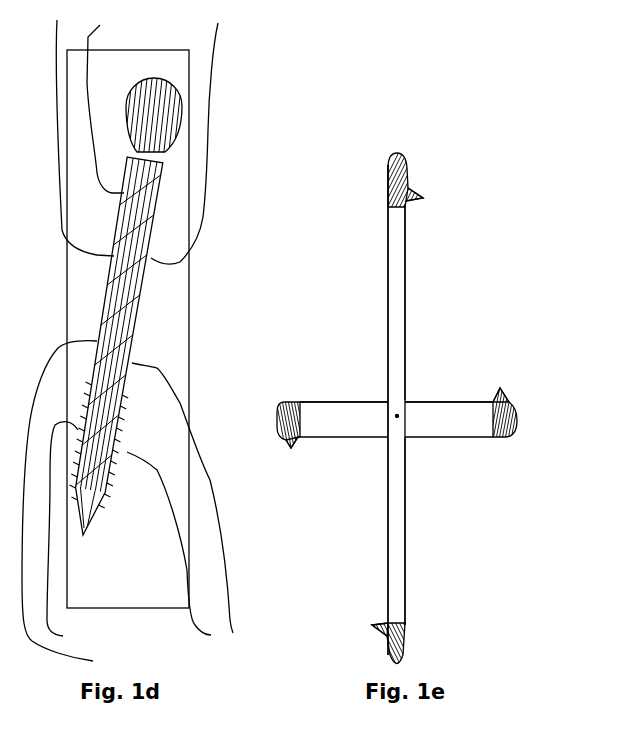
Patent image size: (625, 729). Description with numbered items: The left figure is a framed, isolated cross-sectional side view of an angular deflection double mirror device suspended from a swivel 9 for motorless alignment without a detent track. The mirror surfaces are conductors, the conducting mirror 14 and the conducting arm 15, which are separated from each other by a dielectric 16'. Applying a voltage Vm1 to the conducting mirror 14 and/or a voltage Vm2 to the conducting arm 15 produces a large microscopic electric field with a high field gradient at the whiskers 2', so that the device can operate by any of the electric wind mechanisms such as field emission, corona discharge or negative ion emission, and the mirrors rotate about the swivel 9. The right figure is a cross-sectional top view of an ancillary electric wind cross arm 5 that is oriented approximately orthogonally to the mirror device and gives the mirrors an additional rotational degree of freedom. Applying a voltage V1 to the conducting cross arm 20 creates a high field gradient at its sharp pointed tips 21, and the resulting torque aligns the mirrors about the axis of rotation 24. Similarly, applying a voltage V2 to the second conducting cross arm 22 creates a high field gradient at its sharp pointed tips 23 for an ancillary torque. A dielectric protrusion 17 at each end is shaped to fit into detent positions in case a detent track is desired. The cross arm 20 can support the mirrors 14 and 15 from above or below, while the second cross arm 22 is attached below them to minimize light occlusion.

In FIG. 1D, the voltage applied to conducting mirror Vm1 is at (64, 133).
In FIG. 1D, the voltage applied to conducting arm Vm2 is at (208, 137).
In FIG. 1D, the dielectric 16' is at (116, 273).
In FIG. 1D, the swivel 9 is at (147, 107).
In FIG. 1D, the conducting mirror 14 is at (70, 506).
In FIG. 1D, the whiskers 2' is at (137, 533).
In FIG. 1D, the conducting arm 15 is at (252, 644).
In FIG. 1E, the marker device 5 is at (313, 255).
In FIG. 1E, the dielectric protrusion 17 is at (389, 163).
In FIG. 1E, the conducting cross arm 20 is at (397, 257).
In FIG. 1E, the sharp pointed tips 21 is at (410, 199).
In FIG. 1E, the second conducting cross arm 22 is at (348, 425).
In FIG. 1E, the sharp pointed tips 23 is at (500, 392).
In FIG. 1E, the axis of rotation 24 is at (396, 413).
In FIG. 1E, the voltage applied to conducting cross arm V1 is at (418, 302).
In FIG. 1E, the voltage applied to second cross arm V2 is at (417, 438).